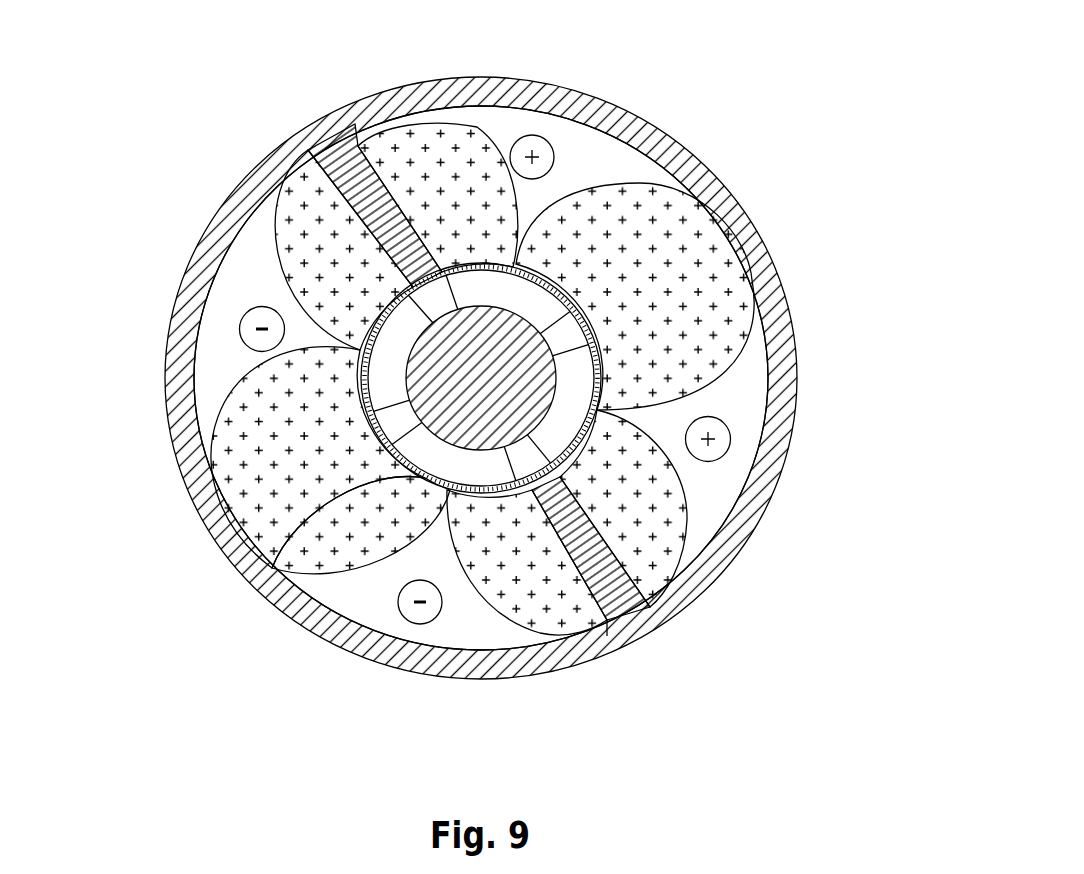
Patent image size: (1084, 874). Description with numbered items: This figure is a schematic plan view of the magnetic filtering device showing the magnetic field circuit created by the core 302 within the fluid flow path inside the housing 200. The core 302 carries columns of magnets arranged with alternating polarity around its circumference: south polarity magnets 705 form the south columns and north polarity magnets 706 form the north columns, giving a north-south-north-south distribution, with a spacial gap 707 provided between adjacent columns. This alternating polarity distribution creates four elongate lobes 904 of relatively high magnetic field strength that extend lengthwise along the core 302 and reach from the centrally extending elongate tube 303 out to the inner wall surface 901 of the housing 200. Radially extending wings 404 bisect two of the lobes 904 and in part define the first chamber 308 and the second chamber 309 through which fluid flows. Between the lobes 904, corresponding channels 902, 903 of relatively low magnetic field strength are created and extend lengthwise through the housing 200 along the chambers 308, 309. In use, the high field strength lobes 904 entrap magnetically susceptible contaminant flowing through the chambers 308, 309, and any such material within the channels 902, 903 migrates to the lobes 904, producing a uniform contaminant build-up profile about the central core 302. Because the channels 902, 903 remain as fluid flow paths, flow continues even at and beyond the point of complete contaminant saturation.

The housing 200 is at (458, 93).
The core 302 is at (598, 325).
The elongate tube 303 is at (274, 566).
The first chamber 308 is at (222, 365).
The second chamber 309 is at (703, 517).
The wings 404 is at (343, 147).
The south polarity magnets 705 is at (497, 467).
The north polarity magnets 706 is at (557, 428).
The spacial gap 707 is at (568, 330).
The inner wall surface 901 is at (600, 133).
The low magnetic field strength channel 902 is at (250, 307).
The low magnetic field strength channel 903 is at (532, 135).
The lobes 904 is at (697, 235).